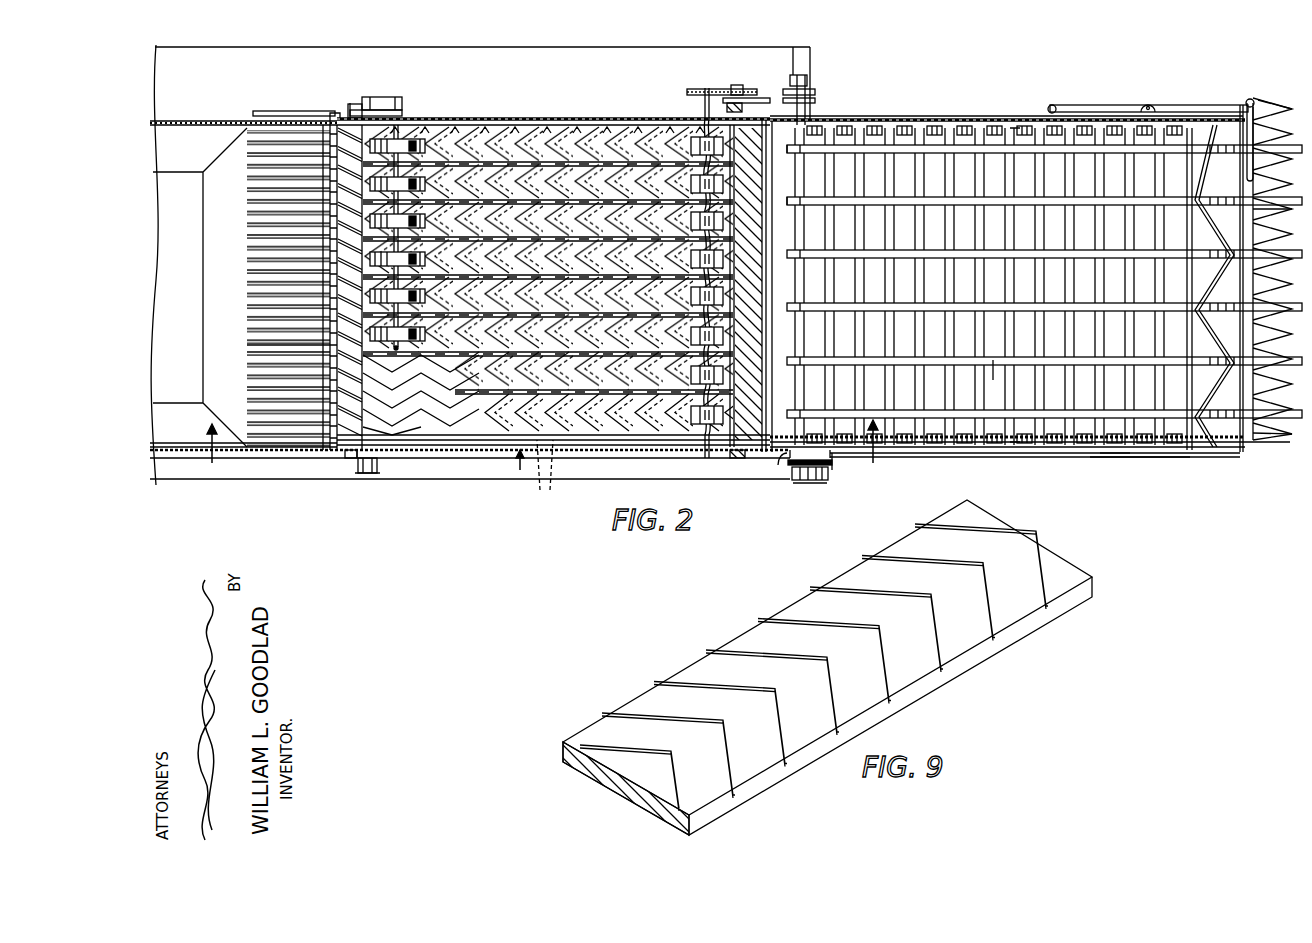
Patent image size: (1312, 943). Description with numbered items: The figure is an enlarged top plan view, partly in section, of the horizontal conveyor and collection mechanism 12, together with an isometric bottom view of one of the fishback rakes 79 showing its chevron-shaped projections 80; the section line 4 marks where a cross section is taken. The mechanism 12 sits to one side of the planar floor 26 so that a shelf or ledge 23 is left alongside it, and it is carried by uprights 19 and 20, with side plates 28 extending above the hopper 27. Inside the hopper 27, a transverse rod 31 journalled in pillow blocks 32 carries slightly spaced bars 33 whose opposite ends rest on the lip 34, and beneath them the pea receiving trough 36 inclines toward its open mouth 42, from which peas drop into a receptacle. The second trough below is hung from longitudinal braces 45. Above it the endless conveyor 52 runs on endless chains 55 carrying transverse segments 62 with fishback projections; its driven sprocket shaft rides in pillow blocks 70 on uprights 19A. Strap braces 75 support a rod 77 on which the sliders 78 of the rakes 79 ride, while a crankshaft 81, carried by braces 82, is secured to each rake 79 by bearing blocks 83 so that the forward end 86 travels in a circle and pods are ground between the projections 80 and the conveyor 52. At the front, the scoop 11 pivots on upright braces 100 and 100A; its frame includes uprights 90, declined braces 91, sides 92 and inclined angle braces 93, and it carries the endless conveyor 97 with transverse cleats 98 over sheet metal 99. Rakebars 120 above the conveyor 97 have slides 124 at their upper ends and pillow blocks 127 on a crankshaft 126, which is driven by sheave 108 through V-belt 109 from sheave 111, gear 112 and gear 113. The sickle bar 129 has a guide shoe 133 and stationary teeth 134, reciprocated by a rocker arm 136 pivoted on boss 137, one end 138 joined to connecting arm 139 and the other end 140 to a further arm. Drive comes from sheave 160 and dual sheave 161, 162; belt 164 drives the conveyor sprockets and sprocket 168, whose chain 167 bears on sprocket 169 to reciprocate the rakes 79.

In FIG. 2, the section line 4-4 arrows 4 is at (533, 452).
In FIG. 2, the scoop 11 is at (1111, 453).
In FIG. 2, the horizontal conveyor and collection mechanism 12 is at (519, 470).
In FIG. 2, the uprights 19 is at (348, 110).
In FIG. 2, the uprights 19A is at (360, 103).
In FIG. 2, the uprights 20 is at (723, 458).
In FIG. 2, the shelf or ledge 23 is at (795, 60).
In FIG. 2, the planar floor 26 is at (636, 70).
In FIG. 2, the hopper 27 is at (190, 262).
In FIG. 2, the side plates 28 is at (206, 120).
In FIG. 2, the transverse rod 31 is at (323, 433).
In FIG. 2, the pillow blocks 32 is at (328, 462).
In FIG. 2, the bars 33 is at (281, 170).
In FIG. 2, the lip 34 is at (247, 343).
In FIG. 2, the pea receiving trough 36 is at (326, 112).
In FIG. 2, the open mouth 42 is at (306, 111).
In FIG. 2, the longitudinal braces 45 is at (622, 112).
In FIG. 2, the endless conveyor 52 is at (427, 436).
In FIG. 2, the endless chains 55 is at (488, 117).
In FIG. 2, the segments 62 is at (387, 432).
In FIG. 2, the pillow blocks 70 is at (368, 474).
In FIG. 2, the strap braces 75 is at (384, 97).
In FIG. 2, the rod 77 is at (417, 142).
In FIG. 2, the sliders 78 is at (417, 183).
In FIG. 2, the fishback rakes 79 is at (553, 215).
In FIG. 9, the fishback rakes 79 is at (785, 766).
In FIG. 2, the chevron-shaped projections 80 is at (545, 473).
In FIG. 9, the chevron-shaped projections 80 is at (725, 738).
In FIG. 2, the crankshaft 81 is at (703, 414).
In FIG. 2, the braces 82 is at (698, 456).
In FIG. 2, the bearing blocks 83 is at (693, 382).
In FIG. 2, the forward end 86 is at (742, 457).
In FIG. 2, the uprights 90 is at (810, 130).
In FIG. 2, the declined braces 91 is at (1169, 117).
In FIG. 2, the sides 92 is at (940, 120).
In FIG. 2, the inclined angle braces 93 is at (918, 117).
In FIG. 2, the endless conveyor 97 is at (1016, 128).
In FIG. 2, the transverse cleats 98 is at (995, 132).
In FIG. 2, the sheet metal 99 is at (1030, 290).
In FIG. 2, the upright braces 100 is at (775, 483).
In FIG. 2, the upright braces 100A is at (808, 78).
In FIG. 2, the sheave 108 is at (1226, 458).
In FIG. 2, the V-belt 109 is at (1138, 458).
In FIG. 2, the sheave 111 is at (828, 456).
In FIG. 2, the gear 112 is at (831, 463).
In FIG. 2, the gear 113 is at (792, 484).
In FIG. 2, the rakebars 120 is at (993, 360).
In FIG. 2, the slide 124 is at (873, 205).
In FIG. 2, the crankshaft 126 is at (1228, 451).
In FIG. 2, the pillow block 127 is at (1211, 415).
In FIG. 2, the sickle bar 129 is at (1286, 426).
In FIG. 2, the guide shoe 133 is at (1264, 100).
In FIG. 2, the stationary teeth 134 is at (1281, 212).
In FIG. 2, the rocker arm 136 is at (1198, 104).
In FIG. 2, the boss 137 is at (1148, 104).
In FIG. 2, the end of rocker arm 138 is at (1239, 101).
In FIG. 2, the connecting arm 139 is at (1276, 108).
In FIG. 2, the other end of rocker arm 140 is at (1066, 106).
In FIG. 2, the sheave 160 is at (788, 453).
In FIG. 2, the sheave 161 is at (815, 101).
In FIG. 2, the sheave 162 is at (815, 92).
In FIG. 2, the belt 164 is at (762, 98).
In FIG. 2, the chain 167 is at (717, 89).
In FIG. 2, the sprocket 168 is at (747, 85).
In FIG. 2, the sprocket 169 is at (707, 89).